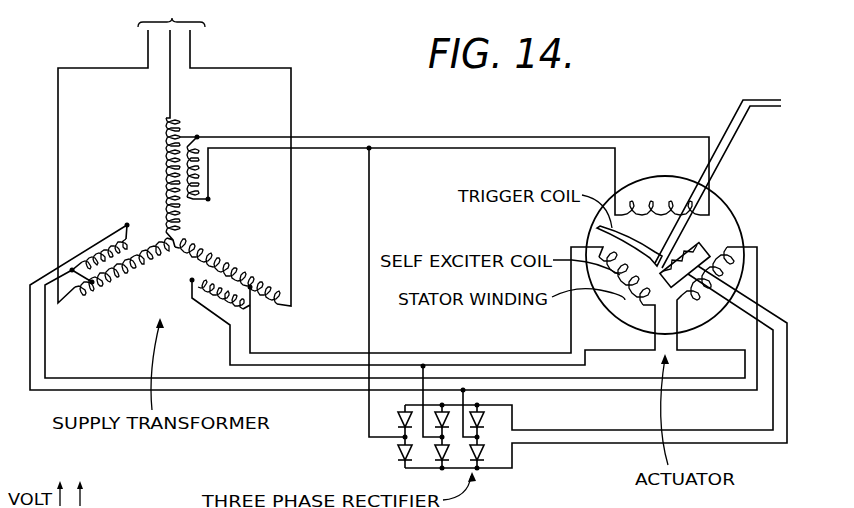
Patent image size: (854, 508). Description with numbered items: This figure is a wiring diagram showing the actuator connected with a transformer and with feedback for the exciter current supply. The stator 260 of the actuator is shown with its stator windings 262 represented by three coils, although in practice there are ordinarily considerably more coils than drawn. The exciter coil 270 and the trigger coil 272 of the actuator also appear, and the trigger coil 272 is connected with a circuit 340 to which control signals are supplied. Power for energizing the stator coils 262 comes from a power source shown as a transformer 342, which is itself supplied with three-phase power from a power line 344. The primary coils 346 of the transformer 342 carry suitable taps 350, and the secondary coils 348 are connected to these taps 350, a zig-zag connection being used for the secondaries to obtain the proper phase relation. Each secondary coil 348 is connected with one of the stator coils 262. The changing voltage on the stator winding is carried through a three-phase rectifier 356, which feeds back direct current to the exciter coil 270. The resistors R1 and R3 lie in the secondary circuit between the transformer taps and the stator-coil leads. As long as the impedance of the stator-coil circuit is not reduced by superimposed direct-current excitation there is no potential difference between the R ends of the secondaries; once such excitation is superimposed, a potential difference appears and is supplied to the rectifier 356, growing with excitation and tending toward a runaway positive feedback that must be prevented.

The circuit 340 is at (773, 87).
The transformer 342 is at (216, 227).
The power line 344 is at (180, 21).
The primary coils 346 is at (178, 120).
The secondary coils 348 is at (201, 166).
The taps 350 is at (240, 275).
The three-phase rectifier 356 is at (514, 420).
The stator 260 is at (727, 203).
The stator windings 262 is at (664, 195).
The exciter coil 270 is at (706, 242).
The trigger coil 272 is at (640, 247).
The resistor R1 is at (110, 236).
The resistor R3 is at (210, 304).